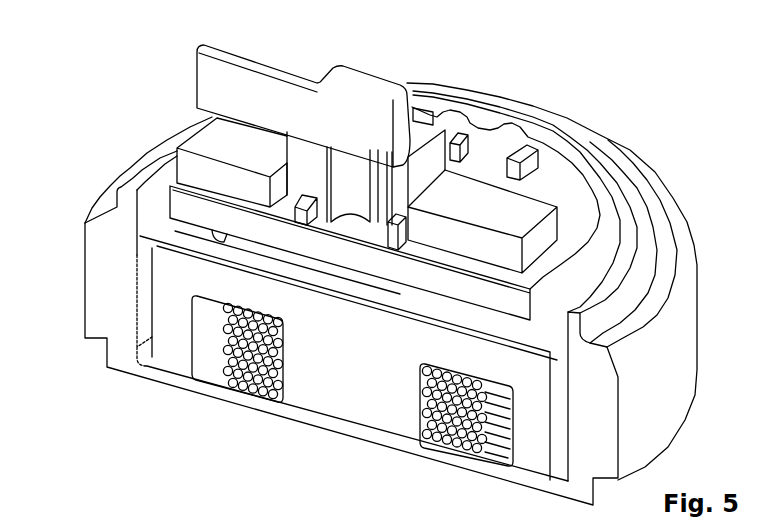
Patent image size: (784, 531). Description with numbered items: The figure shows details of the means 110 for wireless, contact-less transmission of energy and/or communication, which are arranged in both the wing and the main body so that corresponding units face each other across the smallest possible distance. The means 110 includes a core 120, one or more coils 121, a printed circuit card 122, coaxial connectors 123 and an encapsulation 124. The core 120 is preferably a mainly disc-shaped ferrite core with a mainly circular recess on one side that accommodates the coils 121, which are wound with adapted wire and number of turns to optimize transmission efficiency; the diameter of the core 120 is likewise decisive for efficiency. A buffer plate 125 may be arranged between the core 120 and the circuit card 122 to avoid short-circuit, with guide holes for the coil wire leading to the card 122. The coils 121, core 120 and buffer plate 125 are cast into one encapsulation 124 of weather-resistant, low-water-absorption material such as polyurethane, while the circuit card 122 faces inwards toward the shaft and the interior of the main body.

The means for wireless transmission 110 is at (155, 111).
The core 120 is at (350, 383).
The coils 121 is at (233, 377).
The printed circuit card 122 is at (594, 207).
The coaxial connectors 123 is at (404, 77).
The encapsulation 124 is at (642, 395).
The buffer plate 125 is at (607, 180).